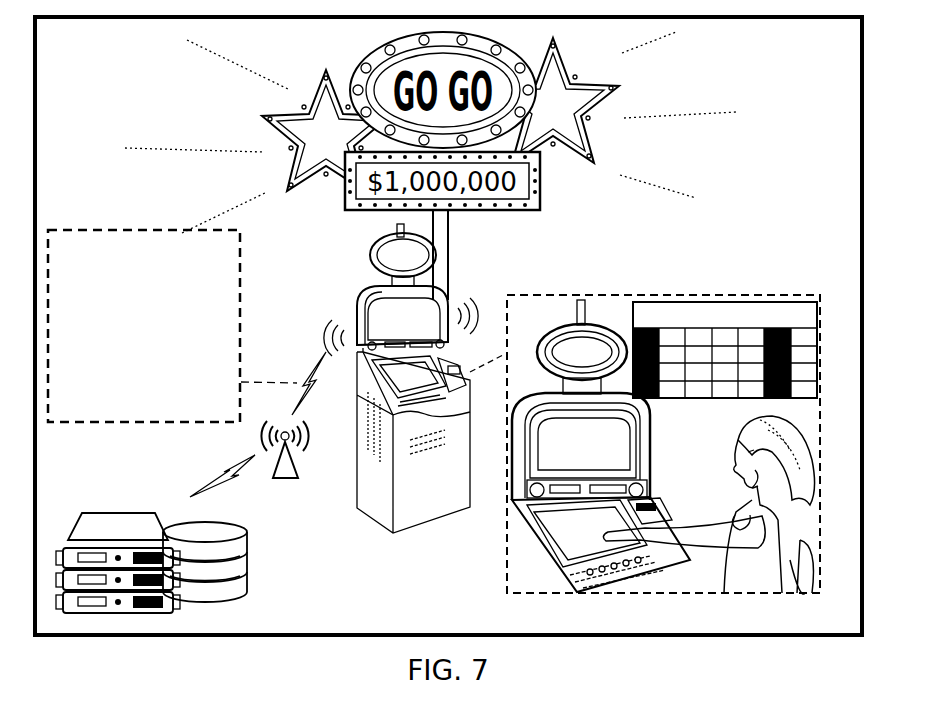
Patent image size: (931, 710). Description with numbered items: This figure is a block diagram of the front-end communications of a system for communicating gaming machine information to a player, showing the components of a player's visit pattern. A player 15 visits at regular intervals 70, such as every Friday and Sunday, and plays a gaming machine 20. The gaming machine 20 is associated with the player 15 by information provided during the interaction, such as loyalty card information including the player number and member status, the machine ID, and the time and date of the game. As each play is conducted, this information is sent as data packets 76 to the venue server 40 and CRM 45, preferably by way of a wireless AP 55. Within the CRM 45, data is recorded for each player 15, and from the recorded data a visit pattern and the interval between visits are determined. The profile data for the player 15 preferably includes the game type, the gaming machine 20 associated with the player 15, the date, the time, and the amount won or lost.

The player 15 is at (780, 593).
The gaming machine 20 is at (364, 298).
The venue server 40 is at (123, 514).
The CRM database 45 is at (194, 521).
The wireless AP 55 is at (297, 470).
The regular intervals 70 is at (767, 295).
The data packets 76 is at (241, 262).